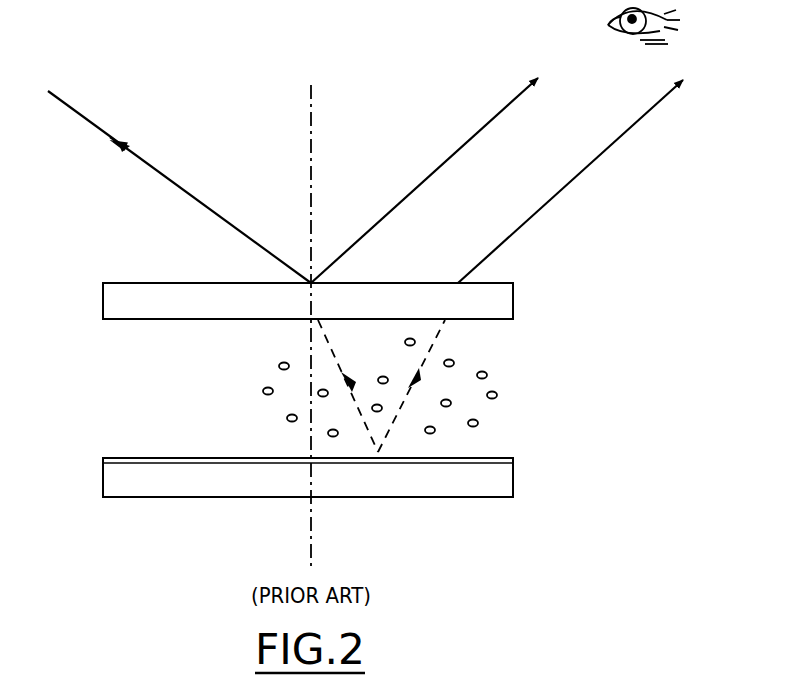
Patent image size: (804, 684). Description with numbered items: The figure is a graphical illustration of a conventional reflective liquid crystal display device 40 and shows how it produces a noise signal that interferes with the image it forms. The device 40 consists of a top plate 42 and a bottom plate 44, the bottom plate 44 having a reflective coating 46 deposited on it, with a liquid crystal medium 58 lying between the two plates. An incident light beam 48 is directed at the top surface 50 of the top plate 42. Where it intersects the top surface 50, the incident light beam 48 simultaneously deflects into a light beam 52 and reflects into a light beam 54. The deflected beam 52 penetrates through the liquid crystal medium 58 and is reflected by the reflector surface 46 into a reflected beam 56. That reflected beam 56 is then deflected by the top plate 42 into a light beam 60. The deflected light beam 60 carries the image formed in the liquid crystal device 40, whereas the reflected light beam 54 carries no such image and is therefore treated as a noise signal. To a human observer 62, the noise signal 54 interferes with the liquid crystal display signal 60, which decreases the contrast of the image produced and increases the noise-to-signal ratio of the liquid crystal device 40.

The reflective liquid crystal display device 40 is at (370, 74).
The top plate 42 is at (513, 298).
The bottom plate 44 is at (513, 481).
The reflective coating 46 is at (501, 456).
The incident light beam 48 is at (83, 111).
The top surface 50 is at (502, 283).
The deflected light beam 52 is at (334, 352).
The reflected light beam 54 is at (507, 108).
The reflected beam 56 is at (440, 331).
The liquid crystal medium 58 is at (487, 376).
The deflected light beam 60 is at (643, 116).
The human observer 62 is at (680, 19).